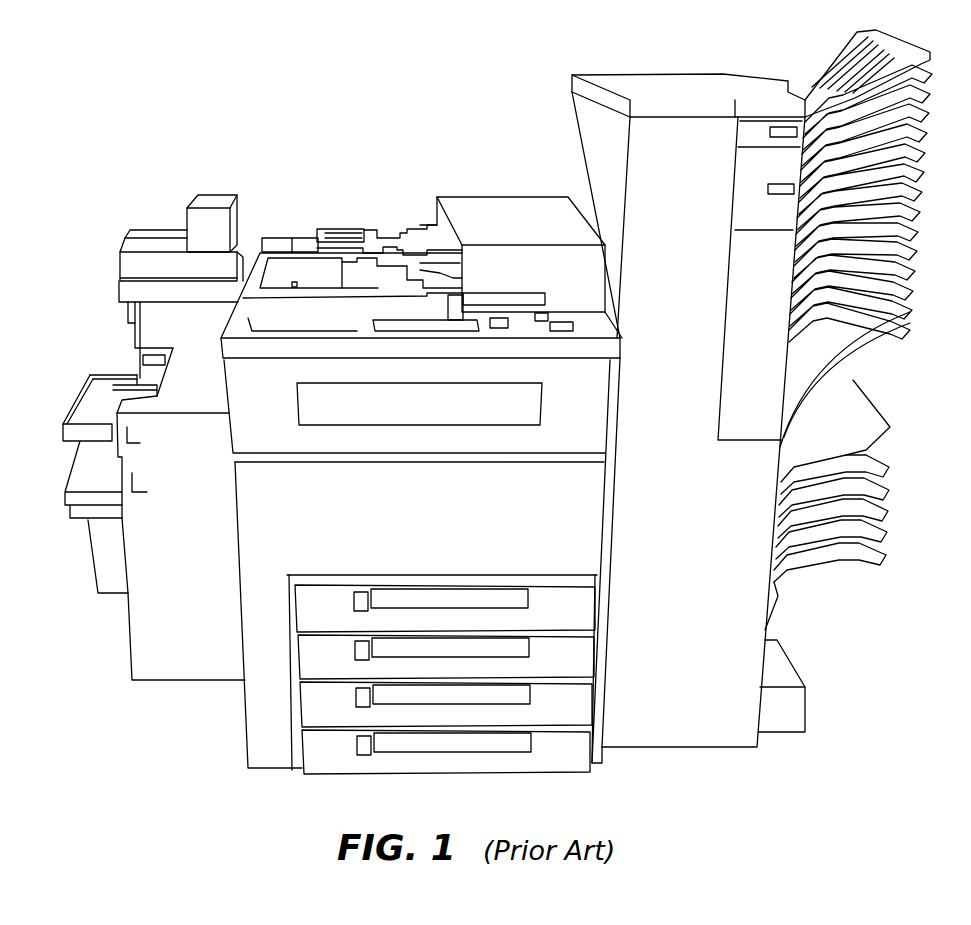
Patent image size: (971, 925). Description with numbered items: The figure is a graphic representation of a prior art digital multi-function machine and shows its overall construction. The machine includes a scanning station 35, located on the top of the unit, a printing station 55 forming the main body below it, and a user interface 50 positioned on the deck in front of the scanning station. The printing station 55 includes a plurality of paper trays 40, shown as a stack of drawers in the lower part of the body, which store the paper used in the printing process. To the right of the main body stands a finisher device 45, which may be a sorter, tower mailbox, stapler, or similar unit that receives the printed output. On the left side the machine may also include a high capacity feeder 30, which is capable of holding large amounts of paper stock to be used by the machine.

The high capacity feeder 30 is at (155, 681).
The scanning station 35 is at (348, 230).
The paper trays 40 is at (572, 772).
The finisher device 45 is at (740, 750).
The user interface 50 is at (443, 332).
The printing station 55 is at (247, 767).